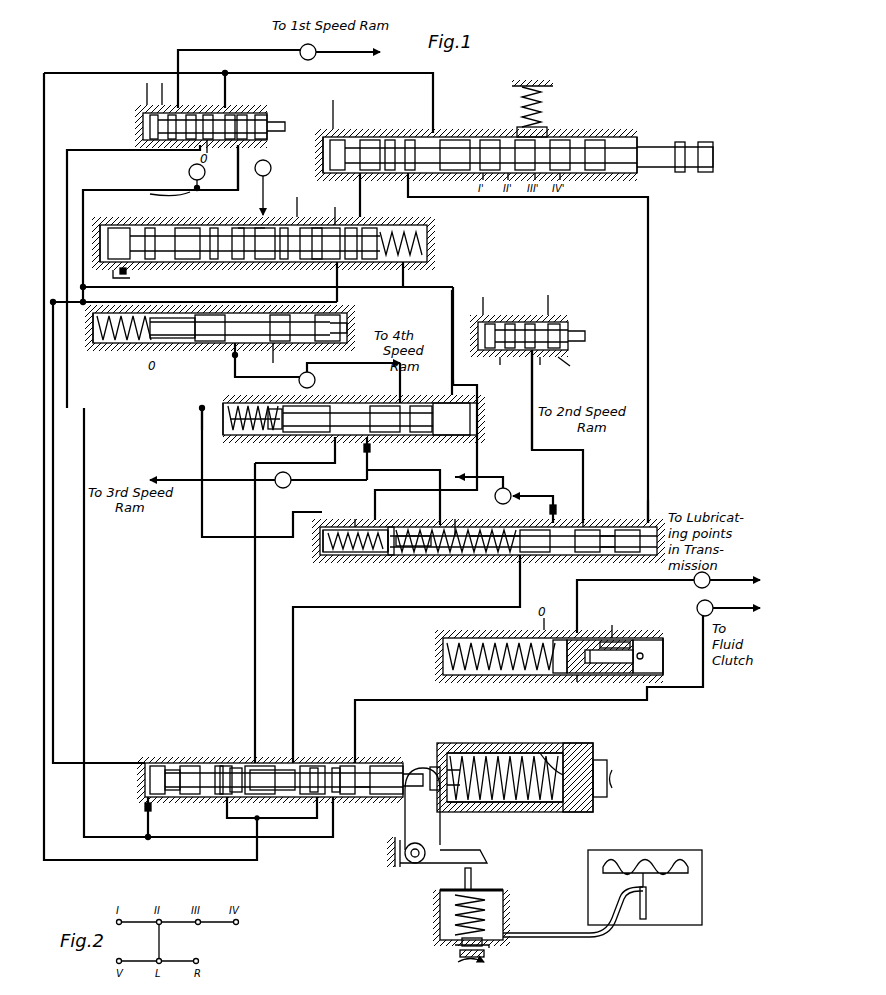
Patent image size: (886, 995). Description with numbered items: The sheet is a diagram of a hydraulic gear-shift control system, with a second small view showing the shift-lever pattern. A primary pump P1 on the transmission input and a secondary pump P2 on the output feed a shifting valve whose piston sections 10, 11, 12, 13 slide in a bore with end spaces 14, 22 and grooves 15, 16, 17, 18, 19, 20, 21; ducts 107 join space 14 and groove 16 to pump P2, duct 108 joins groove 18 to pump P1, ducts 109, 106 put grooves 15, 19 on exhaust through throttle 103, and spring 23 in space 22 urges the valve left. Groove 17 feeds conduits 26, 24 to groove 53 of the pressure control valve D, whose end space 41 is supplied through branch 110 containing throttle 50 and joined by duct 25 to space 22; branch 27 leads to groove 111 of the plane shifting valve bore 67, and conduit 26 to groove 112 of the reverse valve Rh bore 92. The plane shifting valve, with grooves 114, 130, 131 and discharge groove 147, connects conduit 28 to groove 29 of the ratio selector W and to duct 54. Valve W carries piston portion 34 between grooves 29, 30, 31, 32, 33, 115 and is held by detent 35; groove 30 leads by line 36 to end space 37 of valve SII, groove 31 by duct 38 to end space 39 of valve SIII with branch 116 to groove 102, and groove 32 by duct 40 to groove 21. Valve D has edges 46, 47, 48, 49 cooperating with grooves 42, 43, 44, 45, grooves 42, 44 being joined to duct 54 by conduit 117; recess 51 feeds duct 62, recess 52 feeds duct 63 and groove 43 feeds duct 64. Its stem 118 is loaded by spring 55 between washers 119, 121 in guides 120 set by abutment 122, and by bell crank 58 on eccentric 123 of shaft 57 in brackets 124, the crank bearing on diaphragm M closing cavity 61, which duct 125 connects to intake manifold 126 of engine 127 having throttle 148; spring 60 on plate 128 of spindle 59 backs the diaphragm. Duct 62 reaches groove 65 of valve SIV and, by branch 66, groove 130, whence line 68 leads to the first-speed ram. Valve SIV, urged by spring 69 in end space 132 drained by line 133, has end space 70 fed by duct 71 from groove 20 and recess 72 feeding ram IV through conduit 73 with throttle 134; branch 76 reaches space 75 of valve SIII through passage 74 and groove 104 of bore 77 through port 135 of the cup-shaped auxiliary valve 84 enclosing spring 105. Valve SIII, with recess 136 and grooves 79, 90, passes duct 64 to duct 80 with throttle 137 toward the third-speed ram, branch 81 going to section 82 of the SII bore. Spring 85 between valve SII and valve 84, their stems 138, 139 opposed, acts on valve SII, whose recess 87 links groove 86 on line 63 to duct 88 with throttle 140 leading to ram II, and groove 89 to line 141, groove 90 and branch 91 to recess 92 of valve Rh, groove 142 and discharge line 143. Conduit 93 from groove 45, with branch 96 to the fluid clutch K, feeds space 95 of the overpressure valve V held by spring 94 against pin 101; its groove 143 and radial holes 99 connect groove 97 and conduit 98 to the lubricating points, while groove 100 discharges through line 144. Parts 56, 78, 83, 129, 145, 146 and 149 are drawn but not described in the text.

The piston section 10 is at (118, 228).
The piston section 11 is at (195, 228).
The piston section 12 is at (280, 228).
The piston section 13 is at (326, 224).
The end space 14 is at (100, 255).
The peripheral groove 15 is at (155, 262).
The peripheral groove 16 is at (200, 262).
The peripheral groove 17 is at (238, 262).
The peripheral groove 18 is at (282, 262).
The peripheral groove 19 is at (316, 262).
The peripheral groove 20 is at (350, 262).
The peripheral groove 21 is at (368, 262).
The end space 22 is at (415, 262).
The spring 23 is at (422, 236).
The conduit 24 is at (84, 468).
The duct 25 is at (53, 498).
The conduit 26 is at (485, 290).
The branch conduit 27 is at (100, 190).
The conduit 28 is at (345, 78).
The groove 29 is at (443, 139).
The groove 30 is at (409, 139).
The groove 31 is at (390, 139).
The groove 32 is at (345, 139).
The groove 33 is at (492, 139).
The piston portion 34 is at (370, 139).
The spring-controlled detent 35 is at (543, 112).
The line 36 is at (648, 240).
The end space 37 is at (650, 515).
The duct 38 is at (453, 365).
The end space 39 is at (443, 403).
The duct 40 is at (360, 190).
The end space 41 is at (150, 763).
The internal peripheral groove 42 is at (224, 763).
The internal peripheral groove 43 is at (236, 112).
The internal peripheral groove 44 is at (345, 763).
The internal peripheral groove 45 is at (372, 763).
The piston edge 46 is at (216, 797).
The piston edge 47 is at (262, 797).
The piston edge 48 is at (310, 797).
The piston edge 49 is at (362, 797).
The throttle 50 is at (145, 807).
The peripheral recess 51 is at (190, 763).
The peripheral recess 52 is at (308, 763).
The groove 53 is at (337, 797).
The duct 54 is at (85, 73).
The compression spring 55 is at (520, 812).
The spring cap 56 is at (594, 798).
The shaft 57 is at (405, 862).
The bell crank 58 is at (418, 823).
The adjustable threaded spindle 59 is at (484, 957).
The compression spring 60 is at (490, 915).
The cavity 61 is at (440, 928).
The duct 62 is at (202, 532).
The duct 63 is at (348, 607).
The duct 64 is at (255, 600).
The internal peripheral groove 65 is at (207, 148).
The branch duct 66 is at (68, 180).
The circumferential groove of plane shifting valve 67 is at (190, 112).
The line 68 is at (237, 50).
The compression spring 69 is at (122, 343).
The end space 70 is at (340, 343).
The duct 71 is at (337, 295).
The circumferential recess 72 is at (262, 343).
The conduit 73 is at (262, 403).
The passage 74 is at (226, 436).
The left end space with spring 75 is at (240, 436).
The branch conduit 76 is at (216, 388).
The bore 77 is at (325, 555).
The piston 78 is at (275, 436).
The peripheral groove 79 is at (372, 405).
The duct 80 is at (320, 481).
The branch duct 81 is at (413, 478).
The enlarged bore section 82 is at (452, 555).
The piston 83 is at (578, 555).
The auxiliary slide valve 84 is at (378, 556).
The helical spring 85 is at (480, 555).
The peripheral groove 86 is at (524, 555).
The circumferential recess 87 is at (574, 514).
The duct 88 is at (533, 496).
The internal peripheral groove 89 is at (604, 555).
The internal peripheral groove 90 is at (416, 397).
The branch line 91 is at (532, 390).
The circumferential recess of reverse valve 92 is at (528, 322).
The conduit 93 is at (515, 700).
The compression spring 94 is at (500, 642).
The space 95 is at (665, 670).
The branch conduit 96 is at (703, 670).
The peripheral groove 97 is at (570, 638).
The conduit 98 is at (577, 605).
The radial holes 99 is at (600, 675).
The peripheral groove 100 is at (628, 640).
The abutment pin 101 is at (650, 652).
The groove 102 is at (390, 526).
The throttle 103 is at (125, 288).
The internal peripheral groove 104 is at (358, 518).
The pressure spring 105 is at (345, 555).
The duct 106 is at (311, 198).
The ducts 107 is at (150, 194).
The duct 108 is at (253, 228).
The duct 109 is at (129, 277).
The branch conduit 110 is at (148, 825).
The groove 111 is at (256, 112).
The groove 112 is at (513, 366).
The groove 114 is at (236, 152).
The groove 115 is at (316, 152).
The branch duct 116 is at (479, 415).
The conduit 117 is at (238, 822).
The stem 118 is at (433, 767).
The washer 119 is at (470, 790).
The guiding means 120 is at (478, 743).
The washer 121 is at (550, 753).
The abutment 122 is at (605, 762).
The eccentric portion 123 is at (428, 850).
The brackets 124 is at (388, 862).
The duct 125 is at (560, 933).
The intake manifold 126 is at (660, 850).
The engine 127 is at (590, 878).
The adjustable supporting plate 128 is at (457, 948).
The port 129 is at (176, 797).
The peripheral groove 130 is at (207, 112).
The groove 131 is at (172, 112).
The end space 132 is at (101, 338).
The line 133 is at (152, 343).
The throttle 134 is at (267, 362).
The port 135 is at (331, 528).
The circumferential recess 136 is at (352, 440).
The adjustable throttle 137 is at (370, 449).
The stem 138 is at (420, 555).
The stem 139 is at (463, 518).
The adjustable throttle 140 is at (550, 509).
The line 141 is at (523, 432).
The peripheral groove 142 is at (551, 367).
The discharge line / external groove 143 is at (552, 303).
The discharge line 144 is at (620, 628).
The piston 145 is at (152, 113).
The piston 146 is at (242, 112).
The discharge groove 147 is at (207, 153).
The engine throttle 148 is at (646, 902).
The drain 149 is at (280, 362).
The pressure control valve D is at (265, 763).
The ratio selector valve W is at (582, 135).
The diaphragm M is at (440, 905).
The fluid clutch K is at (728, 608).
The overpressure valve V is at (580, 685).
The reverse valve Rh is at (573, 367).
The second speed gear shift control valve SII is at (552, 555).
The third speed gear shift control valve SIII is at (320, 405).
The fourth speed gear shift control valve SIV is at (205, 343).
The primary pump P1 is at (263, 187).
The secondary pump P2 is at (197, 177).
The second speed hydraulic ram II is at (503, 496).
The fourth speed hydraulic ram IV is at (349, 375).